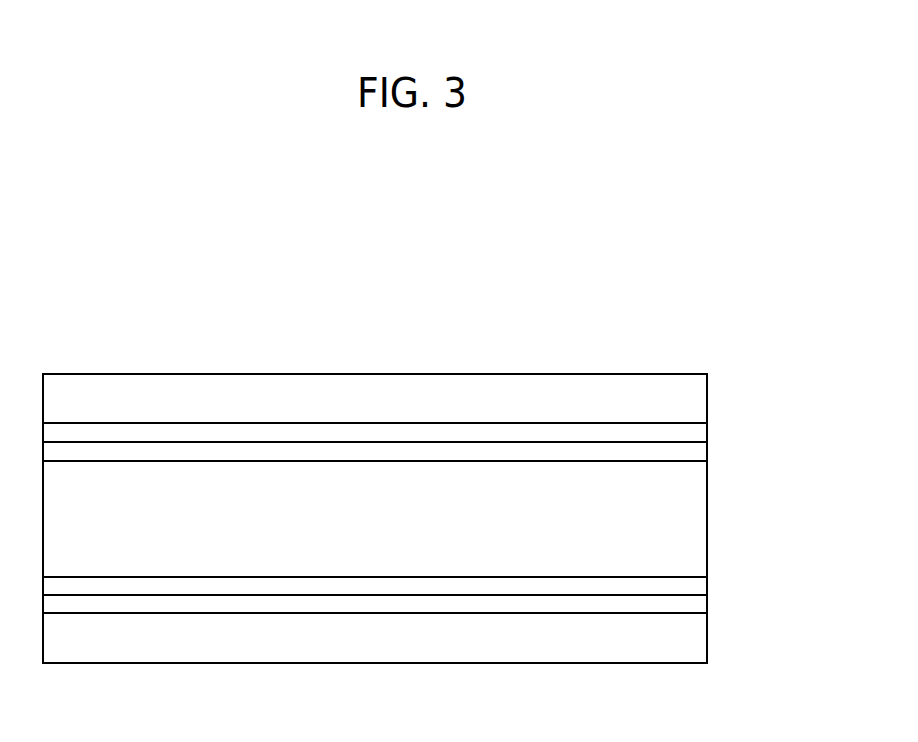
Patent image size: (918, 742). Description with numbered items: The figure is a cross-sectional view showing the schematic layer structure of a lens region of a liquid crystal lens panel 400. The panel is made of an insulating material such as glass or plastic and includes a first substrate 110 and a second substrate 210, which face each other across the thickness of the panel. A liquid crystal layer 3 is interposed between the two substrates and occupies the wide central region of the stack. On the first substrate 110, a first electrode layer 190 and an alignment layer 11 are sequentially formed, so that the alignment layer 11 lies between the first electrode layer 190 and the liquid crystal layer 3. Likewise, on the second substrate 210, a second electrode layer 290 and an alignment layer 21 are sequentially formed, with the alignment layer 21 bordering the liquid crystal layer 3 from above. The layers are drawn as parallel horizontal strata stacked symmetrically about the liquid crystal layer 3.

The liquid crystal lens panel 400 is at (395, 282).
The second substrate 210 is at (700, 399).
The second electrode layer 290 is at (700, 433).
The alignment layer 21 is at (695, 452).
The liquid crystal layer 3 is at (695, 520).
The alignment layer 11 is at (695, 587).
The first electrode layer 190 is at (700, 607).
The first substrate 110 is at (700, 642).